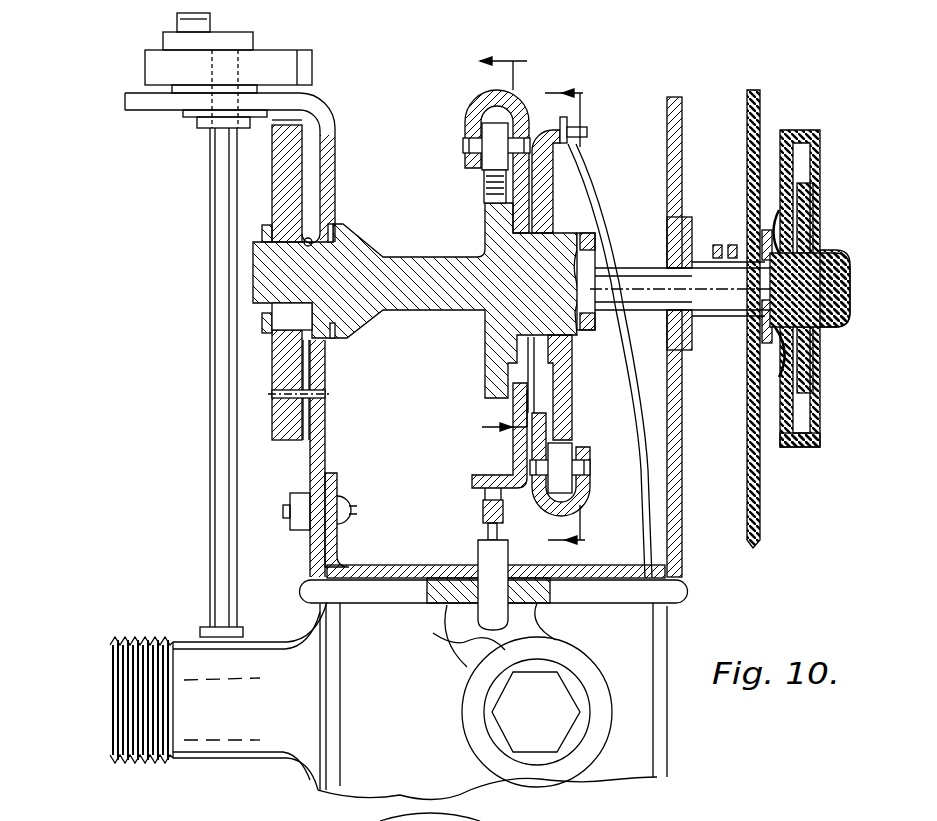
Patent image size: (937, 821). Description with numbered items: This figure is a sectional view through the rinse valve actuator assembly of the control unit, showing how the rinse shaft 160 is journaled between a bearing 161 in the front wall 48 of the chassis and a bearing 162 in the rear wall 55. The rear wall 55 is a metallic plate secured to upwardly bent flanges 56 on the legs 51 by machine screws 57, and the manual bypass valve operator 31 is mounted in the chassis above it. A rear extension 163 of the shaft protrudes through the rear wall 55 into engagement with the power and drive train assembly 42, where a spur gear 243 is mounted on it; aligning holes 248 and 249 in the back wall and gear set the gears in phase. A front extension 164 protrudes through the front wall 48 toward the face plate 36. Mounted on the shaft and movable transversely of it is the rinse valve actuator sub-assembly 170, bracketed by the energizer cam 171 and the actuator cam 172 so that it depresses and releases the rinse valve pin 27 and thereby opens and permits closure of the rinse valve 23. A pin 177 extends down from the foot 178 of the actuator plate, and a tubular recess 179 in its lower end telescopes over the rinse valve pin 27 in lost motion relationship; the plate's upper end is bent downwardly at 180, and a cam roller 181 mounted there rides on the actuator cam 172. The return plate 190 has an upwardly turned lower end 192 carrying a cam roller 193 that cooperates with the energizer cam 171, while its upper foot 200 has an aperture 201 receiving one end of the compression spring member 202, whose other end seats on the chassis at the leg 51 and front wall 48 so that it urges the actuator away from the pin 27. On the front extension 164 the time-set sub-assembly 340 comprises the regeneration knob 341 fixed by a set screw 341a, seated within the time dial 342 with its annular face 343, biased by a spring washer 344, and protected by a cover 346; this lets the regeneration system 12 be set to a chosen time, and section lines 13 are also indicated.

The rinse valve 23 is at (404, 719).
The rinse valve pin 27 is at (475, 612).
The manual bypass valve operator 31 is at (285, 29).
The face plate 36 is at (758, 120).
The power and drive train assembly 42 is at (260, 203).
The front wall 48 is at (682, 125).
The legs 51 is at (405, 568).
The rear wall 55 is at (310, 562).
The upwardly bent flanges 56 is at (333, 551).
The machine screws 57 is at (343, 497).
The rinse shaft 160 is at (418, 263).
The bearing 161 is at (663, 251).
The bearing 162 is at (326, 228).
The rear extension 163 is at (257, 292).
The front extension 164 is at (732, 313).
The rinse valve actuator sub-assembly 170 is at (469, 74).
The energizer cam 171 is at (572, 367).
The actuator cam 172 is at (485, 385).
The pin 177 is at (483, 508).
The foot 178 is at (472, 478).
The tubular recess 179 is at (488, 528).
The downwardly bent upper end 180 is at (463, 160).
The cam roller 181 is at (483, 171).
The return plate 190 is at (545, 193).
The upwardly turned lower end 192 is at (590, 457).
The cam roller 193 is at (567, 447).
The foot 200 is at (587, 133).
The aperture 201 is at (570, 122).
The compression spring member 202 is at (605, 208).
The spur gear 243 is at (272, 382).
The aligning hole 248 is at (320, 397).
The aligning hole 249 is at (273, 398).
The time-set sub-assembly 340 is at (832, 368).
The regeneration knob 341 is at (823, 307).
The set screw 341a is at (720, 243).
The time dial 342 is at (797, 447).
The annular face 343 is at (792, 150).
The spring washer 344 is at (778, 355).
The protective cover 346 is at (827, 253).
The regeneration system 12 is at (578, 322).
The section line 13- 13 is at (514, 258).